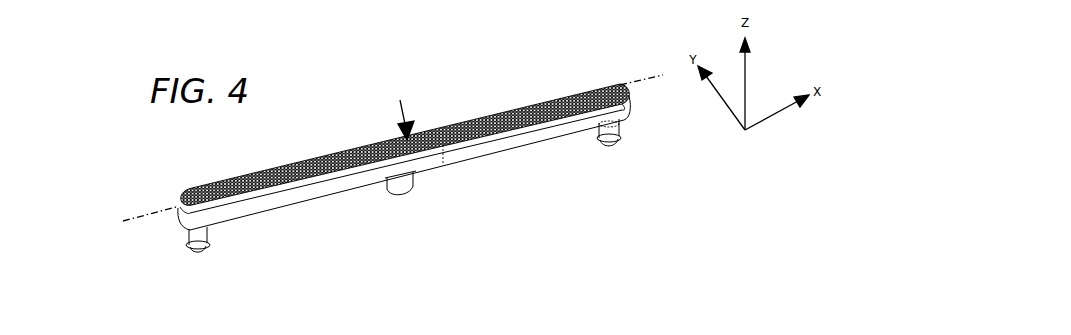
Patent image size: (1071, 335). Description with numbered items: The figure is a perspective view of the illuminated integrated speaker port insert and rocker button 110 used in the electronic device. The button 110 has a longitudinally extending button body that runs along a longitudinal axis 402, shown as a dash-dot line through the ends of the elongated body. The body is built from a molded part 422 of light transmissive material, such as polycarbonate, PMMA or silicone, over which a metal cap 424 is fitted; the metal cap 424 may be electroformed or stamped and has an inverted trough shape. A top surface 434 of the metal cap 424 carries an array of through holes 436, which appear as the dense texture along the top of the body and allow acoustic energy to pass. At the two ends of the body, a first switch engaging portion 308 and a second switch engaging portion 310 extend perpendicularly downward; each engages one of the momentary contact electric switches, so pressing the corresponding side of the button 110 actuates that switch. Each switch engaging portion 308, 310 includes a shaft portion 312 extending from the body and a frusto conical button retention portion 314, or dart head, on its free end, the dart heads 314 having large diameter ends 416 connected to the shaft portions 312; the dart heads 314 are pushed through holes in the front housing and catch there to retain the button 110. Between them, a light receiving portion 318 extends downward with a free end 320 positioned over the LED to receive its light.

The illuminated integrated speaker port insert and rocker button 110 is at (366, 185).
The longitudinal axis 402 is at (366, 174).
The first switch engaging portion 308 is at (190, 230).
The second switch engaging portion 310 is at (617, 118).
The shaft portion 312 is at (595, 125).
The frusto conical button retention portion 314 is at (190, 247).
The light receiving portion 318 is at (393, 182).
The free end 320 is at (400, 195).
The large diameter end 416 is at (207, 240).
The molded part 422 is at (412, 181).
The metal cap 424 is at (347, 162).
The top surface 434 is at (398, 107).
The through holes 436 is at (480, 127).